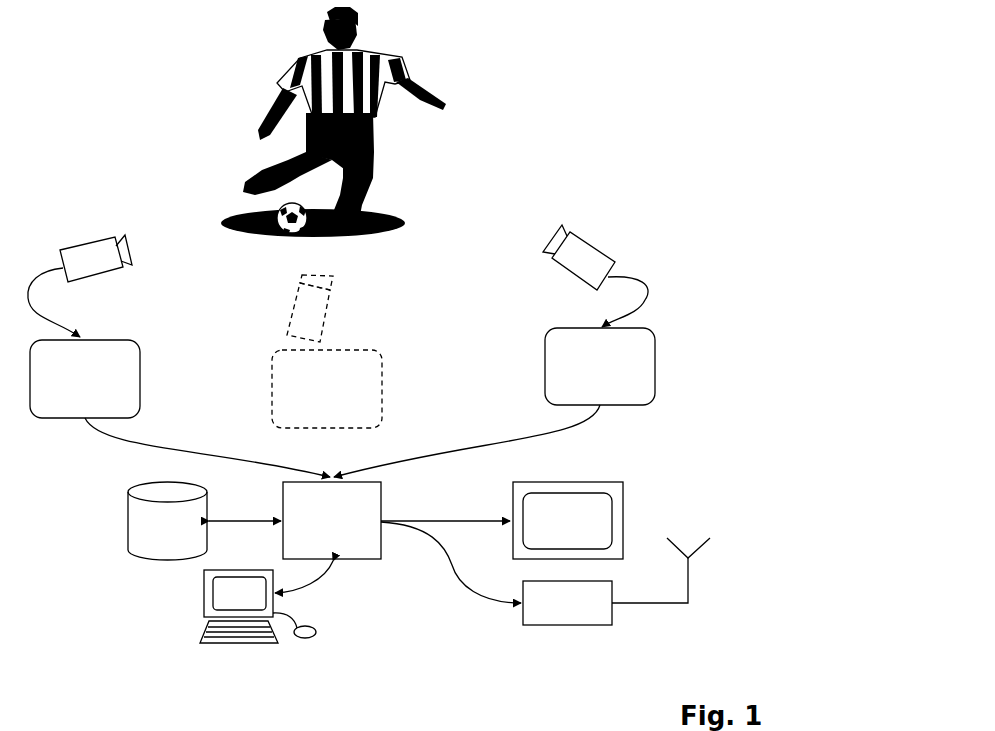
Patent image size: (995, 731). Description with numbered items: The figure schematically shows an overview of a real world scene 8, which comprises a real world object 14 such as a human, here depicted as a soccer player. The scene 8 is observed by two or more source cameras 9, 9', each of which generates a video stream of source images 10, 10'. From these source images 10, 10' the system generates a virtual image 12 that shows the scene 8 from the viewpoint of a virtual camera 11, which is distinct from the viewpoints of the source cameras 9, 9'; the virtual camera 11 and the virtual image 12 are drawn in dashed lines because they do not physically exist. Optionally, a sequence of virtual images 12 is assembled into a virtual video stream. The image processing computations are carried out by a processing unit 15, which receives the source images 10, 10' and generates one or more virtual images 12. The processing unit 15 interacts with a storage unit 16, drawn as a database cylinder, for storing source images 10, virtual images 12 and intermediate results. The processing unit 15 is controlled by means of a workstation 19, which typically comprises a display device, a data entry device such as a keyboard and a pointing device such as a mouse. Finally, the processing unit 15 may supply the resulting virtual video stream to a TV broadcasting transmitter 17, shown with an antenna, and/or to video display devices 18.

The real world scene 8 is at (151, 83).
The source camera 9 is at (82, 245).
The source camera 9' is at (597, 256).
The source images 10 is at (114, 379).
The source images 10' is at (637, 366).
The virtual camera 11 is at (327, 315).
The virtual image 12 is at (382, 377).
The real world object 14 is at (380, 125).
The processing unit 15 is at (372, 552).
The storage unit 16 is at (130, 528).
The TV broadcasting transmitter 17 is at (570, 628).
The video display devices 18 is at (623, 485).
The workstation 19 is at (213, 598).